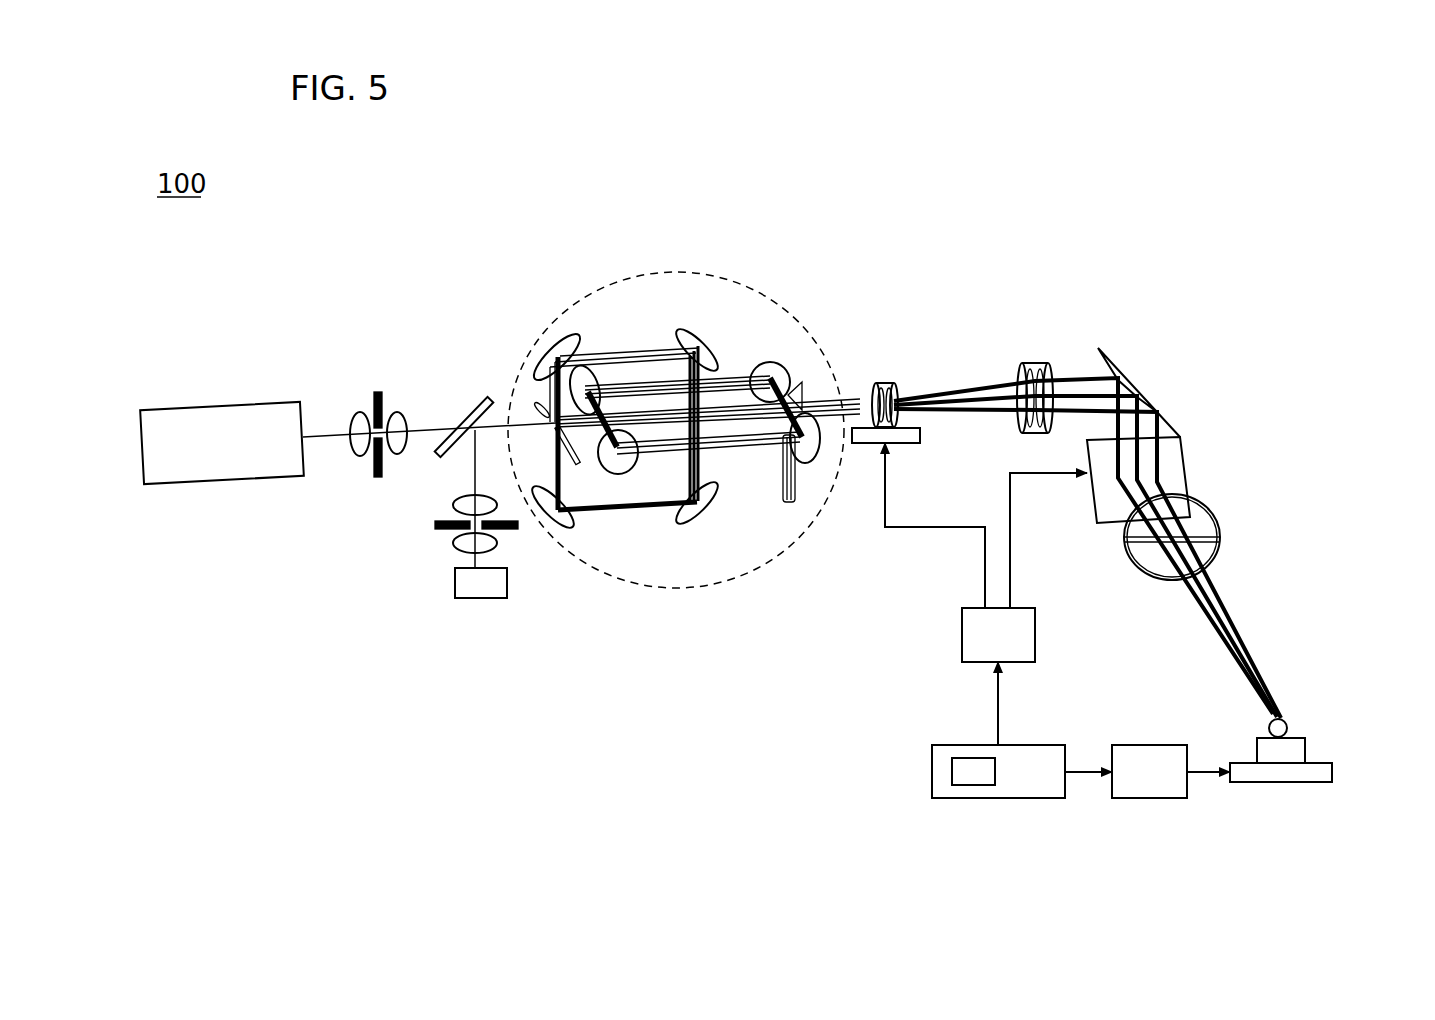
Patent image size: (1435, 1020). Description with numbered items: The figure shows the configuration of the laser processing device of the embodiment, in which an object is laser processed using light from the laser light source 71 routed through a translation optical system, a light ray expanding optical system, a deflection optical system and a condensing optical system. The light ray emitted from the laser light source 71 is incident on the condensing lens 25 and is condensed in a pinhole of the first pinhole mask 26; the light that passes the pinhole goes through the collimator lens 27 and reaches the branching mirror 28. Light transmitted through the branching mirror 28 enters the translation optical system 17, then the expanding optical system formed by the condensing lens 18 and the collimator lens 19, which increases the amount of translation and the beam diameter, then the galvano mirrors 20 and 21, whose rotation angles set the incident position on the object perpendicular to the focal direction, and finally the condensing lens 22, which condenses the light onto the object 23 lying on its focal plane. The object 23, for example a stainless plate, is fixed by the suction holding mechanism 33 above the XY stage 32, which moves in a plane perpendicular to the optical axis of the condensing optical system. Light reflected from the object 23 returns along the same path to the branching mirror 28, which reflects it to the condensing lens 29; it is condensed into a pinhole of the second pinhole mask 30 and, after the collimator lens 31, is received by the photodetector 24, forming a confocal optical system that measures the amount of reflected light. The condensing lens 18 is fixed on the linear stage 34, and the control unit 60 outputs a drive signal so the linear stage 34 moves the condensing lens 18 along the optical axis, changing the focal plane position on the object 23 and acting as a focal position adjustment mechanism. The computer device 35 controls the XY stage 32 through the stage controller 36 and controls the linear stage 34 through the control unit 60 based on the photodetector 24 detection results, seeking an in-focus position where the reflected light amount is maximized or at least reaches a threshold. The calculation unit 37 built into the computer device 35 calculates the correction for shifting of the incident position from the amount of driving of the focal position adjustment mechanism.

The laser light source 71 is at (204, 405).
The condensing lens 25 is at (352, 416).
The first pinhole mask 26 is at (378, 392).
The collimator lens 27 is at (402, 414).
The branching mirror 28 is at (485, 398).
The condensing lens 29 is at (453, 505).
The second pinhole mask 30 is at (435, 526).
The collimator lens 31 is at (453, 546).
The photodetector 24 is at (478, 598).
The translation optical system 17 is at (662, 272).
The condensing lens 18 is at (878, 383).
The linear stage 34 is at (868, 444).
The collimator lens 19 is at (1033, 363).
The galvano mirror 20 is at (1131, 382).
The galvano mirror 21 is at (1188, 472).
The condensing lens 22 is at (1220, 536).
The object 23 is at (1288, 726).
The suction holding mechanism 33 is at (1305, 753).
The XY stage 32 is at (1332, 772).
The control unit 60 is at (962, 635).
The computer device 35 is at (936, 745).
The calculation unit 37 is at (952, 772).
The stage controller 36 is at (1140, 745).